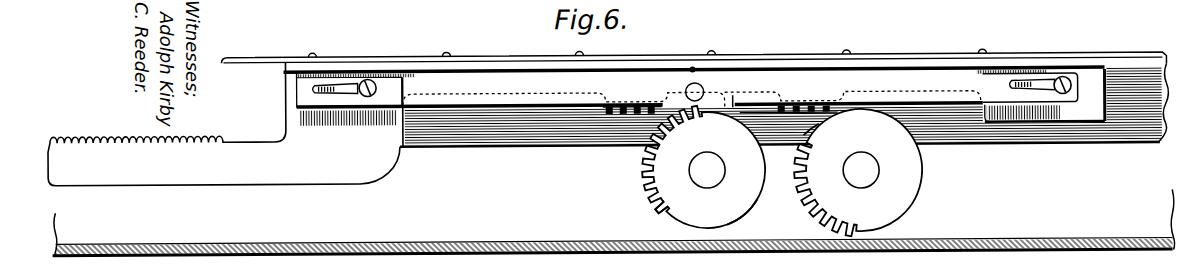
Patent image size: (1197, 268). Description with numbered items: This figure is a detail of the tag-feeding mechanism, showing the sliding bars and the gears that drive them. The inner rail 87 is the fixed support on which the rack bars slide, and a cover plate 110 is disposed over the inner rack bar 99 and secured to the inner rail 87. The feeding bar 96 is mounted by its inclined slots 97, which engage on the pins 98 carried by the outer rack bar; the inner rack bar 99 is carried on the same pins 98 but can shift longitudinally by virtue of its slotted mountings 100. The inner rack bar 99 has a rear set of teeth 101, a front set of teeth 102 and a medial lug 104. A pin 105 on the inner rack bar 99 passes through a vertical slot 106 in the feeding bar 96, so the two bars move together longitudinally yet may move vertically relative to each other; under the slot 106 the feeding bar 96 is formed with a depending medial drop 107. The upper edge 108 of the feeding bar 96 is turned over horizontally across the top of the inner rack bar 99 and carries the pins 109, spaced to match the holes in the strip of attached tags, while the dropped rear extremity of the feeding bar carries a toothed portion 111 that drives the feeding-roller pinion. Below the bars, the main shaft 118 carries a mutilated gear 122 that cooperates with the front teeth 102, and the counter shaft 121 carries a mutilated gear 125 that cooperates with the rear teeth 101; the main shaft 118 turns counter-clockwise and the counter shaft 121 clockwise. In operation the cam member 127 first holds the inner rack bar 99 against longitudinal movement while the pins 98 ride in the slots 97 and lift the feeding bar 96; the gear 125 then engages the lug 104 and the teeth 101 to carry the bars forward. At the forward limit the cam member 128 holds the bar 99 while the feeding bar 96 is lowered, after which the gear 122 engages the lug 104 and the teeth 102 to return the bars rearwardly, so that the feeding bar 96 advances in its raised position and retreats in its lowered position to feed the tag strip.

The inner rail 87 is at (495, 146).
The feeding bar 96 is at (553, 122).
The inclined slots 97 is at (325, 72).
The pins 98 is at (376, 87).
The inner rack bar 99 is at (740, 92).
The slotted mountings 100 is at (315, 94).
The rear set of teeth 101 is at (638, 104).
The front set of teeth 102 is at (812, 104).
The medial lug 104 is at (713, 104).
The pin 105 is at (692, 68).
The vertical slot 106 is at (699, 76).
The depending medial drop 107 is at (704, 166).
The upper edge 108 is at (895, 61).
The pins 109 is at (576, 52).
The cover plate 110 is at (270, 56).
The toothed portion 111 is at (143, 148).
The main shaft 118 is at (878, 165).
The counter shaft 121 is at (719, 176).
The mutilated gear 122 is at (884, 209).
The mutilated gear 125 is at (735, 208).
The cam member 127 is at (835, 138).
The cam member 128 is at (661, 204).